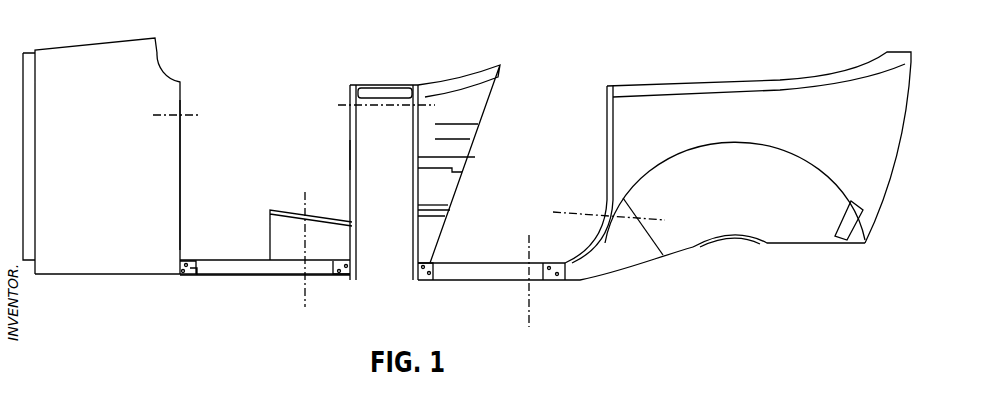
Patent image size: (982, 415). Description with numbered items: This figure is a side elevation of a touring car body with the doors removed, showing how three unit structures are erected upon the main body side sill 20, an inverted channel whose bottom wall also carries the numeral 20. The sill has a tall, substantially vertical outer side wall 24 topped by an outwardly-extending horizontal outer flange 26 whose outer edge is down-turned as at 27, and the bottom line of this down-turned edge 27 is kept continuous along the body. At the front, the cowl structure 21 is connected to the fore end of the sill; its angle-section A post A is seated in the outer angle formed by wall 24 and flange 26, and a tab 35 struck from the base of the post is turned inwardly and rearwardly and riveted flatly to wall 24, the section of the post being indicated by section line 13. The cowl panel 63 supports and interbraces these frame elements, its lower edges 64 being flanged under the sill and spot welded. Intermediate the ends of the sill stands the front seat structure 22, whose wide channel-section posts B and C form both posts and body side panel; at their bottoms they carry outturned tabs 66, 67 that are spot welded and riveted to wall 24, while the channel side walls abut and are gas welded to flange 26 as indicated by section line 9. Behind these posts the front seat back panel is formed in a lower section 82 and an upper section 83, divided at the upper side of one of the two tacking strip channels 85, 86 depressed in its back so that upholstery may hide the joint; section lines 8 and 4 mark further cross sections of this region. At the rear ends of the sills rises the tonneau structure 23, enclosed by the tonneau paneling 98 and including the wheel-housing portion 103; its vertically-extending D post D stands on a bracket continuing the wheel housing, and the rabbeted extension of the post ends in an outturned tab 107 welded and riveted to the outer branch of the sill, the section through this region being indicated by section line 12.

The cowl structure 21 is at (107, 142).
The cowl panel 63 is at (54, 156).
The lower edges of cowl panel 64 is at (130, 275).
The outer side wall 24 is at (235, 262).
The body side sill 20 is at (220, 260).
The tab 35 is at (186, 276).
The outturned tab 66 is at (338, 273).
The section line of Fig. 13 is at (201, 121).
The section line of Fig. 9 is at (311, 307).
The front seat structure 22 is at (425, 154).
The section line of Fig. 8 is at (435, 111).
The upper section of front seat back panel 83 is at (478, 126).
The tacking strip channel 86 is at (462, 172).
The tacking strip channel 85 is at (447, 208).
The lower section of front seat back panel 82 is at (444, 232).
The outer flange 26 is at (490, 263).
The down-turned edge 27 is at (523, 282).
The outturned tab 67 is at (428, 273).
The outturned tab 107 is at (548, 279).
The section line of Fig. 4 is at (544, 327).
The section line of Fig. 12 is at (553, 206).
The tonneau structure 23 is at (759, 143).
The tonneau paneling 98 is at (888, 136).
The wheel-housing portion 103 is at (735, 192).
The A post A is at (181, 181).
The B post B is at (349, 156).
The C post C is at (456, 159).
The D post D is at (607, 126).